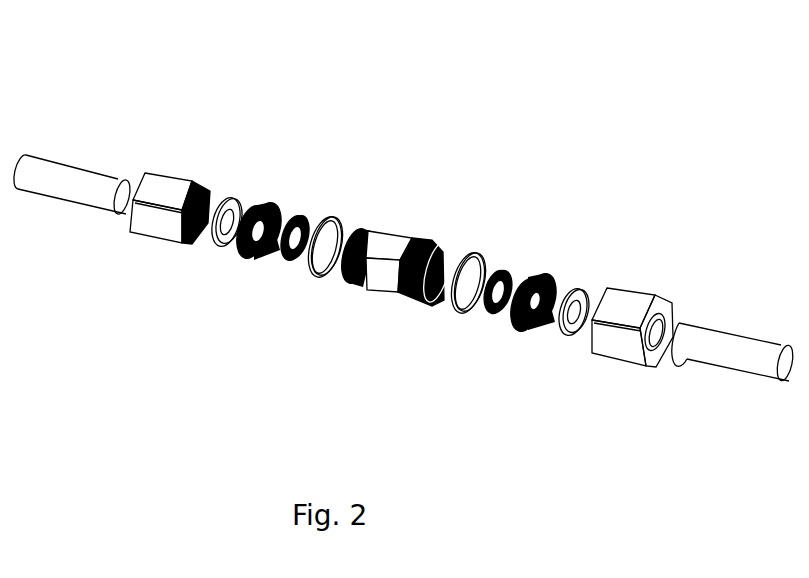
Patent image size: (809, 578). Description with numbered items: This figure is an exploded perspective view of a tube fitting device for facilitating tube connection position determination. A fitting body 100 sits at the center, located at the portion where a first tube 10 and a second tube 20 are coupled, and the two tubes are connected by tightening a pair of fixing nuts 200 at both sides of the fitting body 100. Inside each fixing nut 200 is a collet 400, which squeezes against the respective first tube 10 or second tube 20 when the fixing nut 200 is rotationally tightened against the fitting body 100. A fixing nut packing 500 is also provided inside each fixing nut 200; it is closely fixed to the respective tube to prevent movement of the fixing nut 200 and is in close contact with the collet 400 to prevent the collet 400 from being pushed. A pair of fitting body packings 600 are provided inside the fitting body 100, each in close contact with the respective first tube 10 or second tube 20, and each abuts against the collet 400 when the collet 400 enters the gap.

The first tube 10 is at (60, 172).
The second tube 20 is at (725, 340).
The fitting body 100 is at (383, 232).
The fixing nut 200 is at (170, 187).
The collet 400 is at (265, 200).
The fixing nut packing 500 is at (226, 200).
The fitting body packing 600 is at (297, 214).